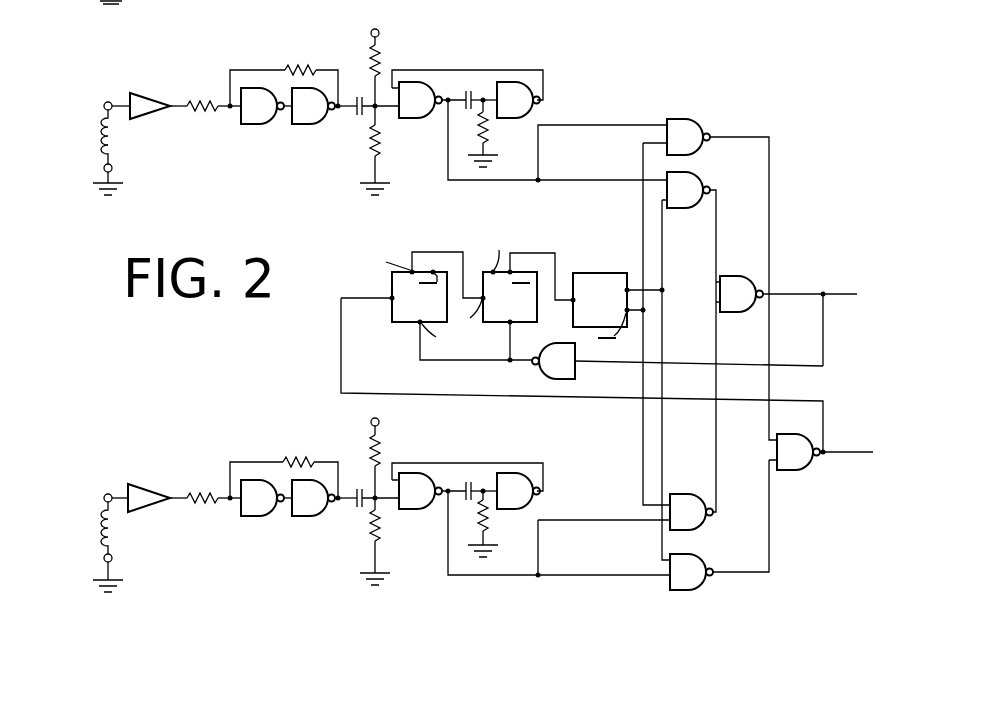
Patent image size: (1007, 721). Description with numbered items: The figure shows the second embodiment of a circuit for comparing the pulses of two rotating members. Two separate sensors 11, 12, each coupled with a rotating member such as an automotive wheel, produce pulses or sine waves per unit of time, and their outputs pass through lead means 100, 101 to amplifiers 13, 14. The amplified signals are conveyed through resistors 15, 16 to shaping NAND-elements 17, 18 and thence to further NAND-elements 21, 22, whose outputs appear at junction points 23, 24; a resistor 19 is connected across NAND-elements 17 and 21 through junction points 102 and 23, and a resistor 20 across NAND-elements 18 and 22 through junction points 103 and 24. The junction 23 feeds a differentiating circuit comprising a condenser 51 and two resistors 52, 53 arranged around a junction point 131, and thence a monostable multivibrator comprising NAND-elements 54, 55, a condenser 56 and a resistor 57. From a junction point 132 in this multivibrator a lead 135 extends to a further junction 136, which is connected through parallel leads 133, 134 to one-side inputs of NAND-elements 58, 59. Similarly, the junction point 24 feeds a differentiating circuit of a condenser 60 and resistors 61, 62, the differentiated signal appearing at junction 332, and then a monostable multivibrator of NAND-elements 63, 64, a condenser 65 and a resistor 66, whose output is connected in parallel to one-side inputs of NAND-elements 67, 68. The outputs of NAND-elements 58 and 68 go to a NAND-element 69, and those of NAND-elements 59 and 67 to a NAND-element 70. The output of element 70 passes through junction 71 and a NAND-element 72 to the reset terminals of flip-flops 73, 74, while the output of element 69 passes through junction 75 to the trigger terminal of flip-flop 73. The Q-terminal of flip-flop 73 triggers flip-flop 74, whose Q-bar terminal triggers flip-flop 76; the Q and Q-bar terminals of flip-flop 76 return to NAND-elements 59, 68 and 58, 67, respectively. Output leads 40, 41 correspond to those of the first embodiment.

The sensor 11 is at (96, 133).
The sensor 12 is at (90, 530).
The amplifier 13 is at (148, 97).
The amplifier 14 is at (156, 499).
The resistor 15 is at (196, 101).
The resistor 16 is at (204, 501).
The NAND-element 17 is at (264, 122).
The NAND-element 18 is at (259, 515).
The resistor 19 is at (304, 67).
The resistor 20 is at (299, 459).
The NAND-element 21 is at (306, 122).
The NAND-element 22 is at (306, 515).
The junction point 23 is at (339, 110).
The junction point 24 is at (340, 503).
The lead 40 is at (841, 292).
The lead 41 is at (852, 455).
The condenser 51 is at (358, 118).
The resistor 52 is at (371, 70).
The resistor 53 is at (383, 150).
The NAND-element 54 is at (417, 85).
The NAND-element 55 is at (512, 85).
The condenser 56 is at (468, 90).
The resistor 57 is at (489, 128).
The NAND-element 58 is at (686, 128).
The NAND-element 59 is at (698, 184).
The condenser 60 is at (358, 489).
The resistor 61 is at (386, 456).
The resistor 62 is at (370, 529).
The NAND-element 63 is at (414, 507).
The NAND-element 64 is at (514, 476).
The condenser 65 is at (468, 481).
The resistor 66 is at (489, 520).
The NAND-element 67 is at (688, 497).
The NAND-element 68 is at (697, 562).
The NAND-element 69 is at (793, 468).
The NAND-element 70 is at (736, 283).
The junction 71 is at (822, 292).
The NAND-element 72 is at (550, 377).
The flip-flop 73 is at (400, 323).
The flip-flop 74 is at (531, 272).
The junction 75 is at (826, 451).
The flip-flop 76 is at (592, 274).
The lead means 100 is at (118, 103).
The lead means 101 is at (118, 495).
The junction point 102 is at (230, 110).
The junction point 103 is at (229, 494).
The junction point 131 is at (378, 112).
The junction point 132 is at (449, 97).
The lead 133 is at (595, 124).
The lead 134 is at (595, 179).
The lead 135 is at (481, 181).
The junction 136 is at (540, 182).
The junction 332 is at (378, 516).